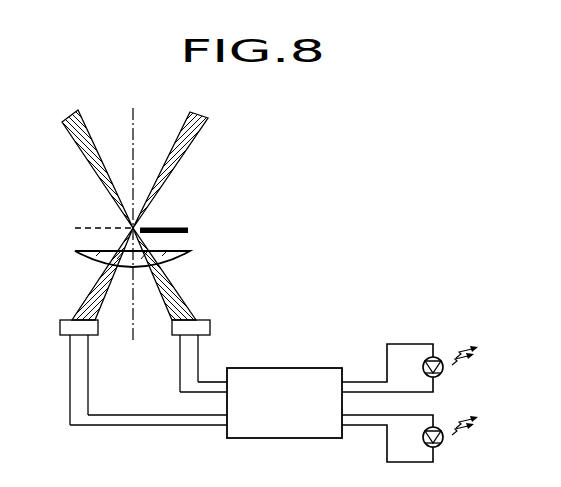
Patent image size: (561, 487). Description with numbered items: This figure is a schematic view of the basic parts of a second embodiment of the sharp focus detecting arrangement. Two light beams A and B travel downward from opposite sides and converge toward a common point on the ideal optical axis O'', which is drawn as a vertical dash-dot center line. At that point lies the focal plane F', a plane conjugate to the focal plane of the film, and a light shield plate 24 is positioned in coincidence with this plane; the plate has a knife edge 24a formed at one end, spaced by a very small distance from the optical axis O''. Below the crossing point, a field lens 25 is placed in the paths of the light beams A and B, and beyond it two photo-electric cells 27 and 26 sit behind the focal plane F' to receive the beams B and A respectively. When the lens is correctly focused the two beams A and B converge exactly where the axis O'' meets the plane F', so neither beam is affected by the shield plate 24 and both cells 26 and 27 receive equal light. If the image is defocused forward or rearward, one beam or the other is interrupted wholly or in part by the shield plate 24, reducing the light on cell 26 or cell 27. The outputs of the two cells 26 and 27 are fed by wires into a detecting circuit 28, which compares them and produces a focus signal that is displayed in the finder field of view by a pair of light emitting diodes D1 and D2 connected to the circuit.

The light shield plate 24 is at (181, 226).
The knife edge 24a is at (142, 225).
The field lens 25 is at (175, 262).
The photo-electric cell 26 is at (204, 328).
The photo-electric cell 27 is at (70, 328).
The detecting circuit 28 is at (294, 413).
The light beam A is at (80, 133).
The light beam B is at (193, 133).
The ideal optical axis O'' is at (157, 104).
The focal plane F' is at (68, 207).
The light emitting diode D1 is at (442, 372).
The light emitting diode D2 is at (442, 442).